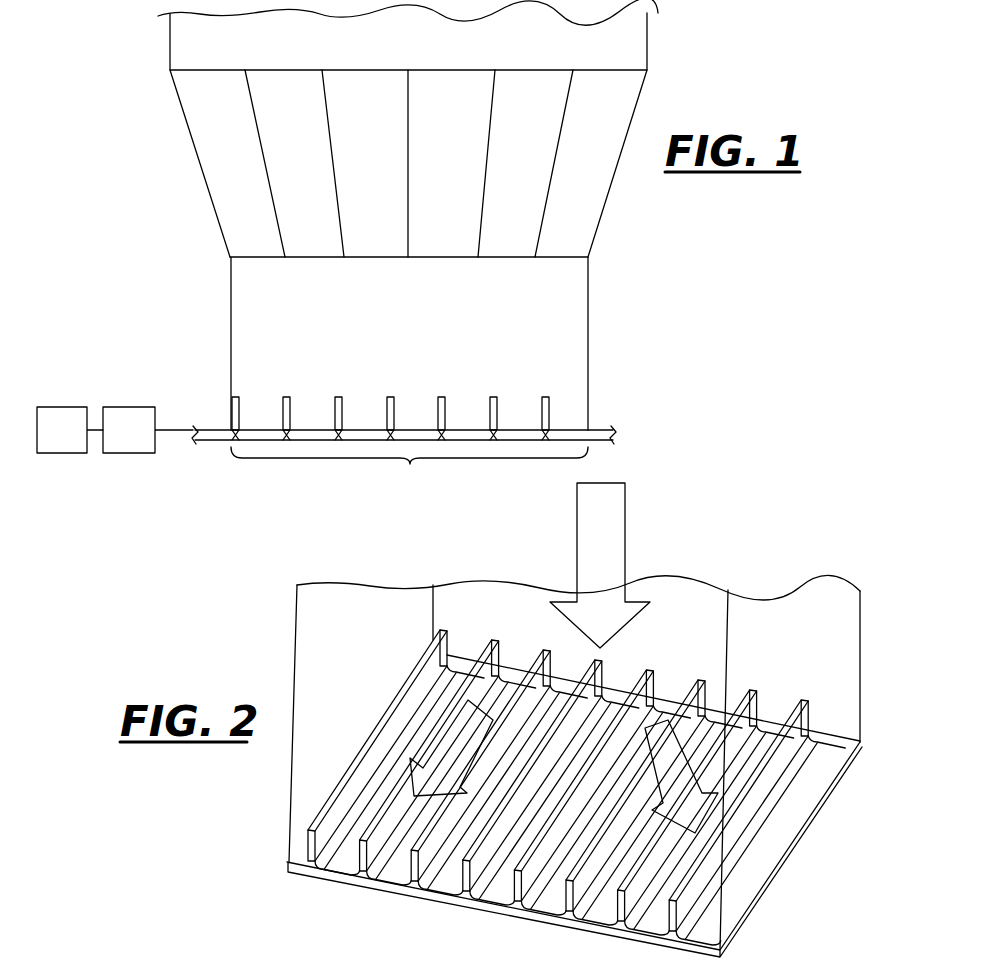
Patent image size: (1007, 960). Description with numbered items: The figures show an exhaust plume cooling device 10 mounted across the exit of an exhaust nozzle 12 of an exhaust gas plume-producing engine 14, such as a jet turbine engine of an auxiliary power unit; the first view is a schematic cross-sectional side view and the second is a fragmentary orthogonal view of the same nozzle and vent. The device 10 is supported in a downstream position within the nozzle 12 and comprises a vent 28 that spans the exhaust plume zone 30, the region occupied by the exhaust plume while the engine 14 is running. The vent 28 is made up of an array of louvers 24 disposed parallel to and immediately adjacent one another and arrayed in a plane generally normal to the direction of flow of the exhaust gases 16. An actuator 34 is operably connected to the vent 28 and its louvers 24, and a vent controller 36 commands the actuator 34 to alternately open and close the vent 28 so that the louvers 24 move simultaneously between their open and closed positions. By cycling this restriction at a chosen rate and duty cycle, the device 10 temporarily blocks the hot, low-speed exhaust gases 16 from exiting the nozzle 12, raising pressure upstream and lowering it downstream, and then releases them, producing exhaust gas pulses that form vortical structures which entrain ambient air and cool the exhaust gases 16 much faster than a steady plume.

In FIG. 1, the exhaust plume cooling device 10 is at (783, 84).
In FIG. 2, the exhaust plume cooling device 10 is at (733, 520).
In FIG. 1, the exhaust nozzle 12 is at (588, 318).
In FIG. 2, the exhaust nozzle 12 is at (297, 603).
In FIG. 1, the engine 14 is at (650, 33).
In FIG. 2, the exhaust gases 16 is at (569, 610).
In FIG. 1, the louvers 24 is at (443, 397).
In FIG. 2, the louvers 24 is at (437, 742).
In FIG. 1, the vent 28 is at (305, 439).
In FIG. 2, the vent 28 is at (752, 892).
In FIG. 1, the exhaust plume zone 30 is at (409, 473).
In FIG. 1, the actuator 34 is at (144, 441).
In FIG. 1, the vent controller 36 is at (77, 441).